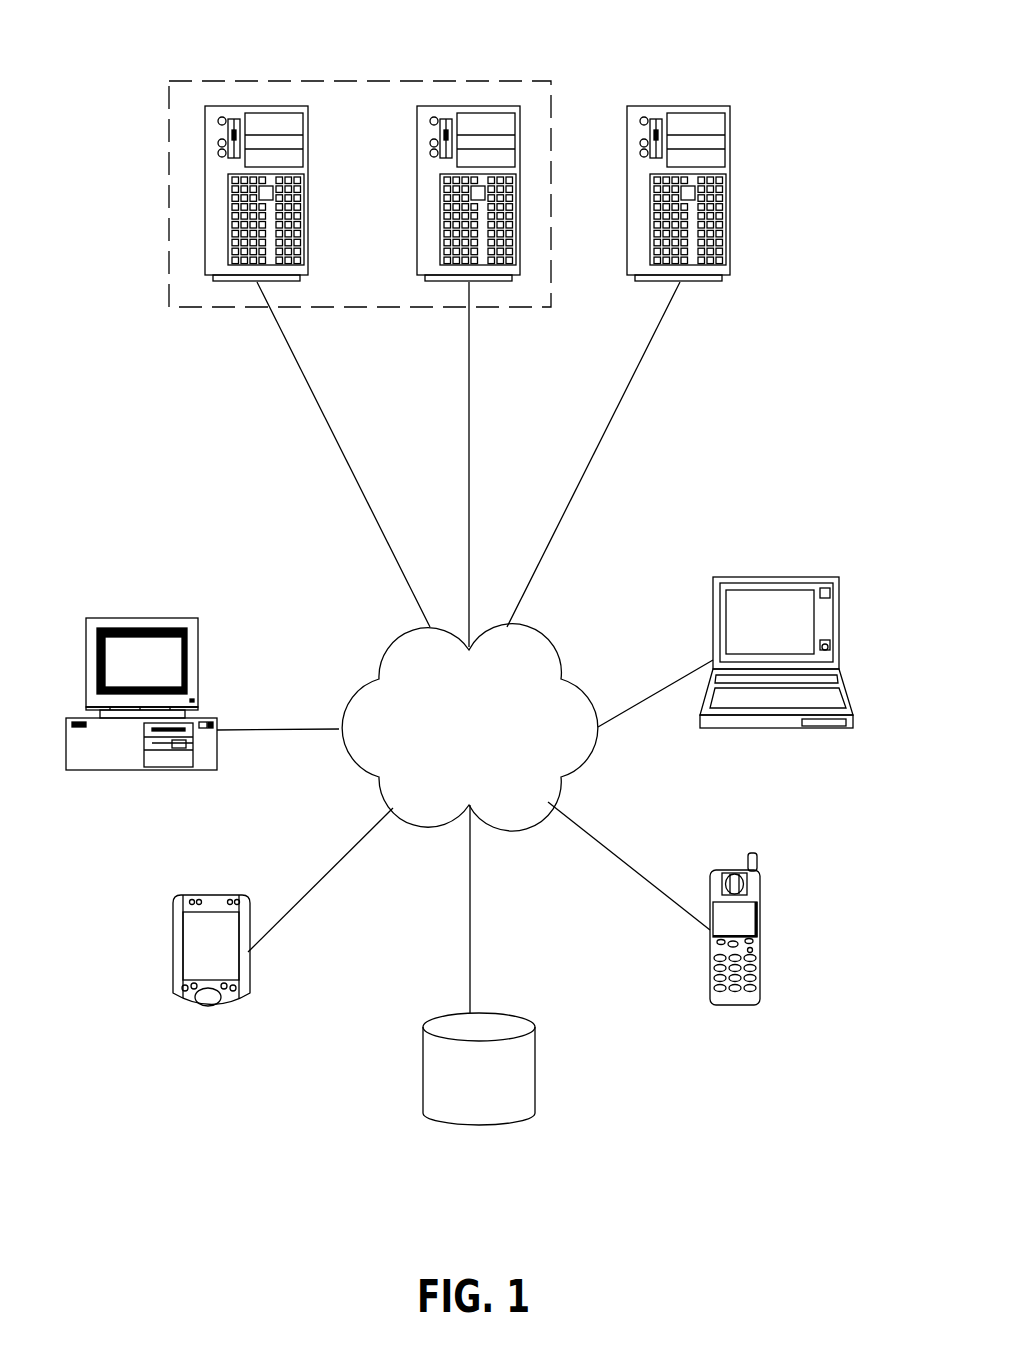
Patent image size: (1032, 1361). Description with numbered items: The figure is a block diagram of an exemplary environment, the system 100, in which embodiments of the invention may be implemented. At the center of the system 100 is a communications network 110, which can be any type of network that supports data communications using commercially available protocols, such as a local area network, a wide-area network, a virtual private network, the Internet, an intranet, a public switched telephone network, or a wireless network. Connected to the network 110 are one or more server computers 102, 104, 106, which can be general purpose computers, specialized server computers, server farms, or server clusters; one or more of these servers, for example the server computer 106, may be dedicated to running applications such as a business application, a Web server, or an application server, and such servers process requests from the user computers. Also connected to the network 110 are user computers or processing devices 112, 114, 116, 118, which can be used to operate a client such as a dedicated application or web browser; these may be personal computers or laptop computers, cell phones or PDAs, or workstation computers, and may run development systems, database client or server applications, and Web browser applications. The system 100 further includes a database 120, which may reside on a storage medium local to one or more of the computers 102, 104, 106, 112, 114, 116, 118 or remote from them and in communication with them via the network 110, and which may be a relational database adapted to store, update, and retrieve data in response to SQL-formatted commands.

The system 100 is at (822, 106).
The server computer 102 is at (238, 106).
The server computer 104 is at (467, 106).
The server computer 106 is at (733, 190).
The communications network 110 is at (450, 773).
The user computer 112 is at (140, 618).
The user computer 114 is at (773, 577).
The user computer 116 is at (730, 1005).
The user computer 118 is at (210, 1012).
The database 120 is at (460, 1113).